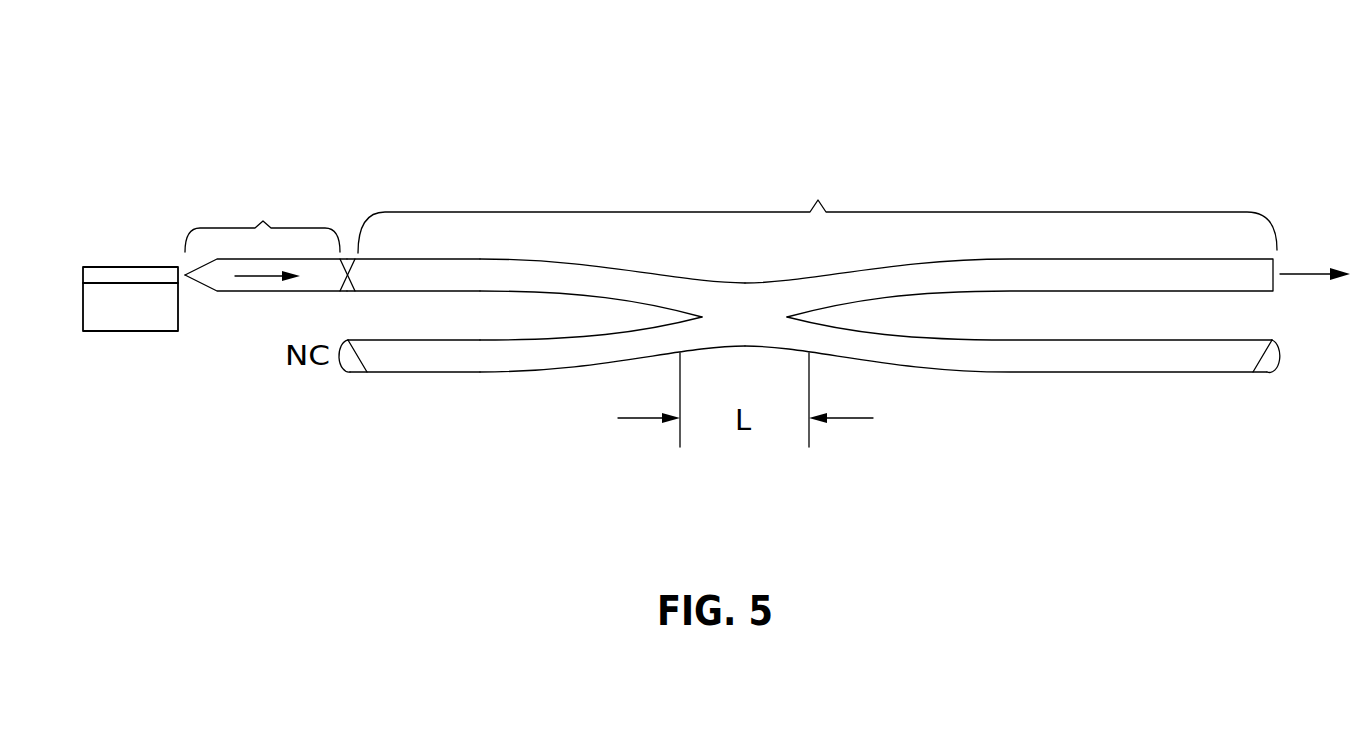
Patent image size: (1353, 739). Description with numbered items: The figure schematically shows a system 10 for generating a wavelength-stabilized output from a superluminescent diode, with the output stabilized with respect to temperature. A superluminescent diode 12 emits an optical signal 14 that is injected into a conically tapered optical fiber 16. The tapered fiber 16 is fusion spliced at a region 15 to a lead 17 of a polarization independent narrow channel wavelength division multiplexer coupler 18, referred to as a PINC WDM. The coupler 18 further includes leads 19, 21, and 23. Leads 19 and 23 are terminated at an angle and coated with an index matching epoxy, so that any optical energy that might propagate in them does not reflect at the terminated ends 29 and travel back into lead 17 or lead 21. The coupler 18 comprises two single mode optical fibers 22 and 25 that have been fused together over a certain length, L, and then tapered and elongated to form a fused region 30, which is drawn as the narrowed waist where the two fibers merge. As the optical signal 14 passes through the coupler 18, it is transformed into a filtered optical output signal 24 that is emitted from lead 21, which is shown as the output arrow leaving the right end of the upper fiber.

The system 10 is at (930, 113).
The superluminescent diode 12 is at (124, 266).
The optical signal 14 is at (255, 279).
The region 15 is at (355, 256).
The conically tapered optical fiber 16 is at (266, 242).
The lead 17 is at (418, 292).
The polarization independent narrow channel wavelength division multiplexer coupler 18 is at (817, 210).
The lead 19 is at (405, 373).
The lead 21 is at (1225, 292).
The single mode optical fiber 22 is at (597, 280).
The lead 23 is at (1168, 373).
The filtered optical output signal 24 is at (1305, 270).
The single mode optical fiber 25 is at (567, 352).
The angled fiber end 29 is at (350, 375).
The fused region 30 is at (745, 315).